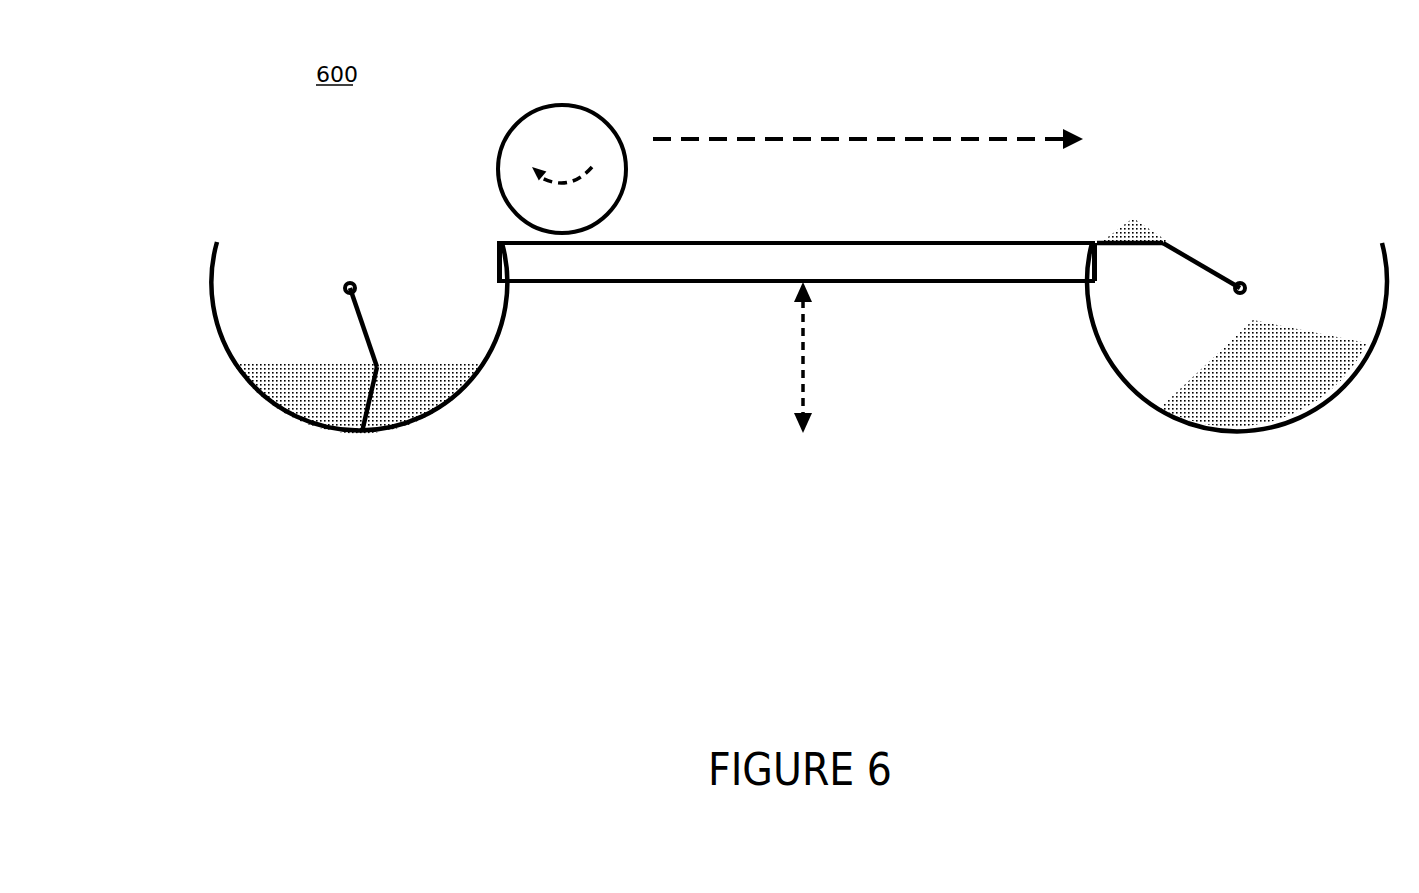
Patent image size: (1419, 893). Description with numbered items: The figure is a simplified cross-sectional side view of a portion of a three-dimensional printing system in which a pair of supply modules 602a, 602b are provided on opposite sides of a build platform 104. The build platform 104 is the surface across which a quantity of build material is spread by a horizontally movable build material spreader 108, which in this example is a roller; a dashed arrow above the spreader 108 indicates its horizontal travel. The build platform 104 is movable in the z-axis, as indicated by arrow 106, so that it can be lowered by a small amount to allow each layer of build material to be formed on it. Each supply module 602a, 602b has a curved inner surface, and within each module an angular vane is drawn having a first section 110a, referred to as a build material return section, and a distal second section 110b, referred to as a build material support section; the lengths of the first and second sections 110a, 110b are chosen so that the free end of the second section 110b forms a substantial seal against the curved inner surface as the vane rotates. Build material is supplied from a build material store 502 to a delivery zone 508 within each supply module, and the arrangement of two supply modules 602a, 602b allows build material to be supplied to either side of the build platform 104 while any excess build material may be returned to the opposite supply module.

The build platform 104 is at (728, 242).
The arrow 106 is at (805, 325).
The build material spreader 108 is at (578, 104).
The first section 110a is at (367, 320).
The second section 110b is at (357, 397).
The build material store 502 is at (572, 458).
The delivery zone 508 is at (395, 380).
The supply module 602a is at (1132, 393).
The supply module 602b is at (213, 310).